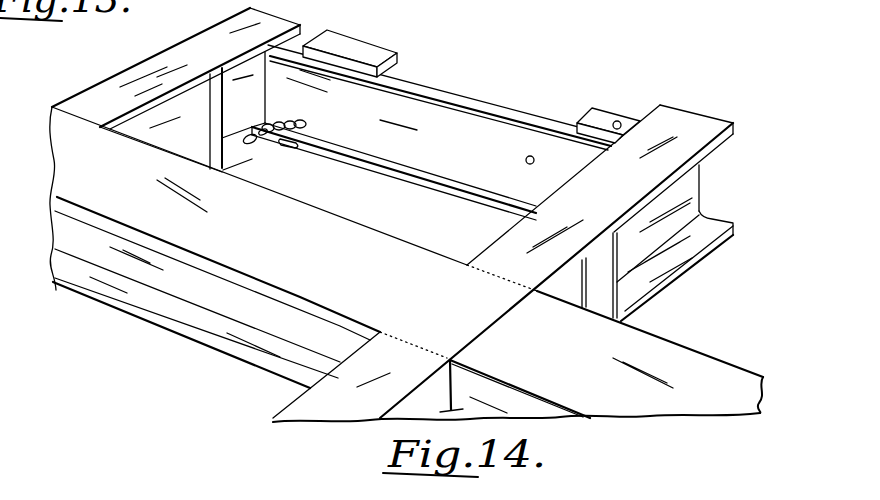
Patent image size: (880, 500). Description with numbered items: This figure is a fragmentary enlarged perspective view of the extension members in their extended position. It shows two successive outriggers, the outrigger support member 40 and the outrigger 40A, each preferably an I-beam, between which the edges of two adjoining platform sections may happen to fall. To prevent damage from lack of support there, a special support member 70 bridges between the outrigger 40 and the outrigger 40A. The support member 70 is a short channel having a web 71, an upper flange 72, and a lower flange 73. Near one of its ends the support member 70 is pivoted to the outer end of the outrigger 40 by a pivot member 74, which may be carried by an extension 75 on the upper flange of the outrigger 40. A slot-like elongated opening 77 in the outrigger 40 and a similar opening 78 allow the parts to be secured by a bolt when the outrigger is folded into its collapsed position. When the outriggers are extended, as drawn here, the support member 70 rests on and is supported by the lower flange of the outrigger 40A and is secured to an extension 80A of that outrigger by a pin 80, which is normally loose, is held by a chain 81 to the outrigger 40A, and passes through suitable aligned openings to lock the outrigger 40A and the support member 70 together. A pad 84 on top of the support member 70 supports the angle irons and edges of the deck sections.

The outrigger support member 40 is at (693, 118).
The outrigger 40A is at (268, 24).
The support member 70 is at (436, 136).
The web 71 is at (449, 141).
The upper flange 72 is at (525, 118).
The lower flange 73 is at (486, 194).
The pivot member 74 is at (629, 108).
The extension 75 is at (610, 114).
The slot-like elongated opening 77 is at (565, 296).
The opening 78 is at (526, 162).
The pin 80 is at (298, 124).
The extension 80A is at (287, 147).
The chain 81 is at (246, 135).
The pad 84 is at (367, 50).